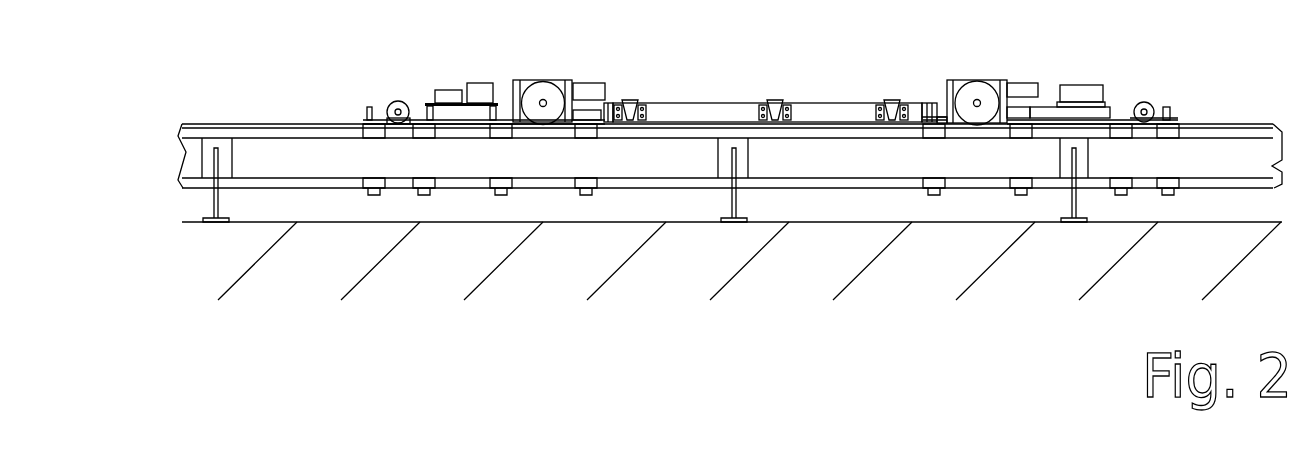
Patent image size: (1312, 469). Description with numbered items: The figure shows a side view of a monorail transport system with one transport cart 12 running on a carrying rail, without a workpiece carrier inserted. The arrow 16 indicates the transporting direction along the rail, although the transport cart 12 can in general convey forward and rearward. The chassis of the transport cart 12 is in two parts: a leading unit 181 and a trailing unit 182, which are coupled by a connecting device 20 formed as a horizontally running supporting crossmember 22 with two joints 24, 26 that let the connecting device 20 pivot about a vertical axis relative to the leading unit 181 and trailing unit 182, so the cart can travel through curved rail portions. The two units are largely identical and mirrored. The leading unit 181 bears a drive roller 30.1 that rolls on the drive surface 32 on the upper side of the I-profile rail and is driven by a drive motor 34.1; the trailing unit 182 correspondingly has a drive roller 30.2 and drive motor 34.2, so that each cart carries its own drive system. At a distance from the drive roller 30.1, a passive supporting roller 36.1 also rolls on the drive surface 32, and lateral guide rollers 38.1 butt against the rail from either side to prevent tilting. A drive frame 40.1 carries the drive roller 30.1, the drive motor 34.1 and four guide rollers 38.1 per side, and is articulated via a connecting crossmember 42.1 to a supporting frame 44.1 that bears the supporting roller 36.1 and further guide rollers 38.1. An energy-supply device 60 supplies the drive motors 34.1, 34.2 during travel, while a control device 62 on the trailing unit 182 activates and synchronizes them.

The transport cart 12 is at (367, 105).
The transporting direction 16 is at (759, 61).
The connecting device 20 is at (710, 102).
The supporting crossmember 22 is at (817, 102).
The joint 24 is at (920, 103).
The joint 26 is at (610, 103).
The drive surface 32 is at (1240, 123).
The energy-supply device 60 is at (1092, 86).
The control device 62 is at (442, 91).
The leading unit 181 is at (1007, 193).
The trailing unit 182 is at (462, 175).
The drive roller 30.1 is at (977, 118).
The drive roller 30.2 is at (543, 118).
The drive motor 34.1 is at (998, 86).
The drive motor 34.2 is at (517, 123).
The supporting roller 36.1 is at (1145, 102).
The lateral guide rollers 38.1 is at (1177, 131).
The drive frame 40.1 is at (940, 123).
The connecting crossmember 42.1 is at (1077, 112).
The supporting frame 44.1 is at (1138, 122).